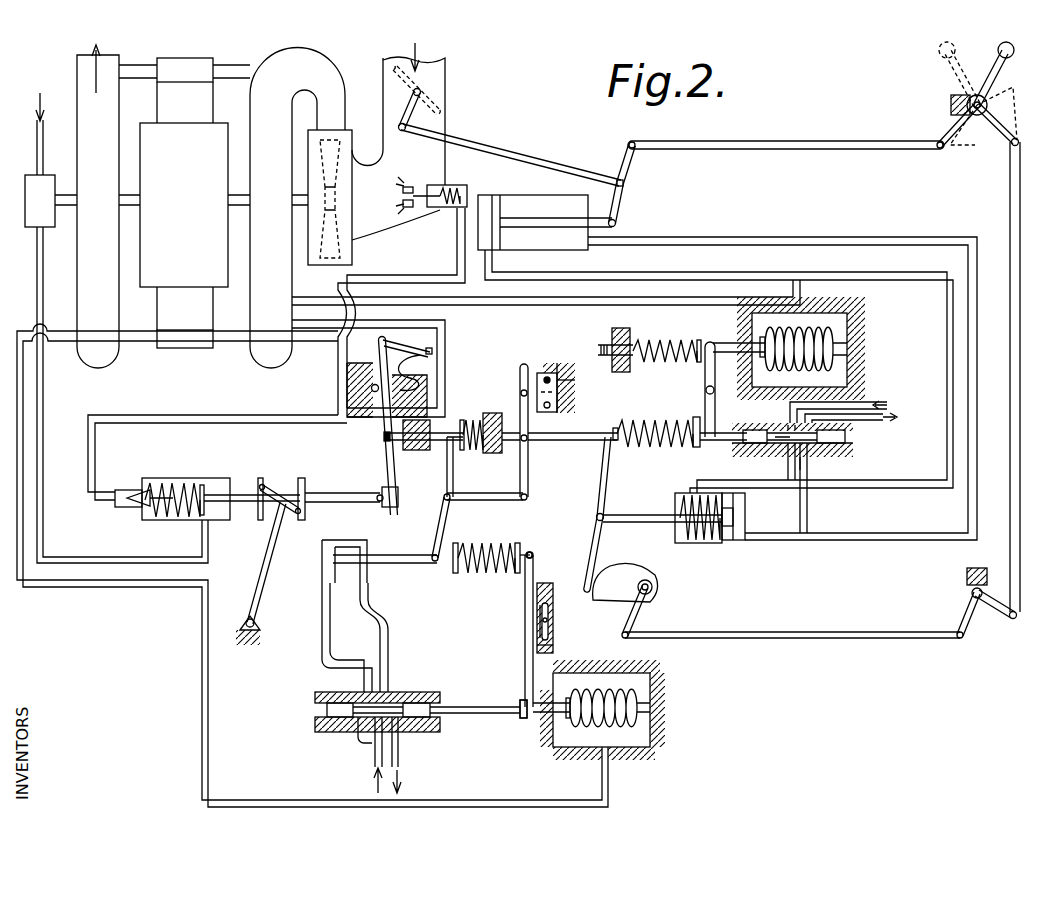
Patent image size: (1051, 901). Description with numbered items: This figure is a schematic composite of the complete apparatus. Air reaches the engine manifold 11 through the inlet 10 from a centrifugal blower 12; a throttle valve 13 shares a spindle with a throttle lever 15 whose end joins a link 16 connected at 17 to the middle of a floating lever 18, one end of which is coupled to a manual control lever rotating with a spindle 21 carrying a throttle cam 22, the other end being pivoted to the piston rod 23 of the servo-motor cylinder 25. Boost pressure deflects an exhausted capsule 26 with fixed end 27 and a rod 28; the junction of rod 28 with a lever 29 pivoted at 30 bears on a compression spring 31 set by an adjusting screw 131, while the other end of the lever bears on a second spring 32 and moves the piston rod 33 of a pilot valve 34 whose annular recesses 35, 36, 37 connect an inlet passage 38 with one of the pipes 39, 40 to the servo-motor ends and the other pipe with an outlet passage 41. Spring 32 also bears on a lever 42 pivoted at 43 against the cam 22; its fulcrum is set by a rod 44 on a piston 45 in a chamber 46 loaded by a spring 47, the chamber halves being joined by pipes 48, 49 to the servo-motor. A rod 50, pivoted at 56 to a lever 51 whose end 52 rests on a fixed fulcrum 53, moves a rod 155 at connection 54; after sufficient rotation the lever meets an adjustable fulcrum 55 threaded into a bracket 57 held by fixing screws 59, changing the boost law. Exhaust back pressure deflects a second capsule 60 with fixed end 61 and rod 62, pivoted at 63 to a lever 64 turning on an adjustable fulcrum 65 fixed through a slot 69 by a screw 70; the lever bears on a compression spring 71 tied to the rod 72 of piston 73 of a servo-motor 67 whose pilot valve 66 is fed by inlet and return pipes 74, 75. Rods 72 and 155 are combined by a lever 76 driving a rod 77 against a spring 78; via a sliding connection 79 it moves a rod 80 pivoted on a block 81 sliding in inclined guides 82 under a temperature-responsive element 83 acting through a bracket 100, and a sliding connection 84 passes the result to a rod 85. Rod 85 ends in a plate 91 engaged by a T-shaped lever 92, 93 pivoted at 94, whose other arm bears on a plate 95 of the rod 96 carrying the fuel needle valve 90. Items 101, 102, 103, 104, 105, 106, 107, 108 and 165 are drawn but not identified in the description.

The inlet to the engine manifold 10 is at (440, 73).
The manifold 11 is at (313, 63).
The centrifugal blower 12 is at (333, 140).
The throttle valve 13 is at (440, 112).
The throttle lever 15 is at (403, 110).
The link 16 is at (487, 140).
The connection 17 is at (617, 180).
The floating lever 18 is at (630, 153).
The spindle 21 is at (965, 100).
The throttle cam 22 is at (617, 583).
The piston rod 23 is at (555, 222).
The servo-motor cylinder 25 is at (617, 211).
The exhausted capsule 26 is at (820, 323).
The capsule end 27 is at (840, 352).
The rod 28 is at (727, 345).
The lever 29 is at (705, 372).
The pivot 30 is at (658, 418).
The compression spring 31 is at (665, 342).
The second compression spring 32 is at (670, 423).
The piston rod 33 is at (728, 432).
The pilot valve 34 is at (757, 432).
The annular recess 35 is at (748, 450).
The annular recess 36 is at (793, 478).
The annular recess 37 is at (812, 446).
The fluid pressure inlet passage 38 is at (857, 402).
The pipe 39 is at (782, 465).
The pipe 40 is at (803, 497).
The pressure outlet passage 41 is at (877, 418).
The lever 42 is at (598, 488).
The pivot 43 is at (597, 520).
The rod 44 is at (647, 519).
The piston 45 is at (733, 540).
The chamber 46 is at (740, 510).
The spring 47 is at (695, 542).
The pipe 48 is at (652, 278).
The pipe 49 is at (782, 243).
The rod 50 is at (612, 430).
The lever 51 is at (520, 406).
The lever end 52 is at (530, 377).
The fixed fulcrum 53 is at (547, 375).
The pivotal connection 54 is at (526, 500).
The fulcrum 55 is at (527, 390).
The pivotal connection 56 is at (513, 440).
The bracket 57 is at (563, 381).
The fixing screws 59 is at (549, 372).
The exhausted capsule 60 is at (620, 673).
The capsule end 61 is at (643, 708).
The rod 62 is at (545, 715).
The pivotal connection 63 is at (526, 718).
The lever 64 is at (525, 658).
The fulcrum 65 is at (537, 618).
The pilot valve 66 is at (413, 703).
The servo-motor 67 is at (335, 540).
The slot 69 is at (552, 636).
The fixing screw 70 is at (546, 620).
The compression spring 71 is at (478, 545).
The rod 72 is at (407, 555).
The piston 73 is at (355, 540).
The inlet pipe 74 is at (373, 760).
The return pipe 75 is at (400, 755).
The lever 76 is at (395, 507).
The rod 77 is at (482, 410).
The compression spring 78 is at (490, 413).
The sliding connection 79 is at (455, 405).
The rod 80 is at (387, 423).
The block 81 is at (378, 377).
The guides 82 is at (368, 380).
The temperature-responsive element 83 is at (418, 395).
The sliding connection 84 is at (395, 490).
The rod 85 is at (360, 493).
The needle valve 90 is at (147, 490).
The plate 91 is at (305, 480).
The T-shaped lever part 92 is at (274, 481).
The T-shaped lever part 93 is at (267, 557).
The pivot 94 is at (246, 619).
The plate 95 is at (258, 487).
The rod 96 is at (217, 497).
The bracket 100 is at (145, 163).
The tube 101 is at (86, 92).
The pipe 102 is at (152, 418).
The valve 103 is at (405, 199).
The pipe 104 is at (1017, 210).
The link rod 105 is at (870, 635).
The link 106 is at (1003, 132).
The lever 107 is at (970, 618).
The link 108 is at (640, 600).
The adjusting screw 131 is at (605, 345).
The rod 155 is at (445, 500).
The valve 165 is at (487, 710).